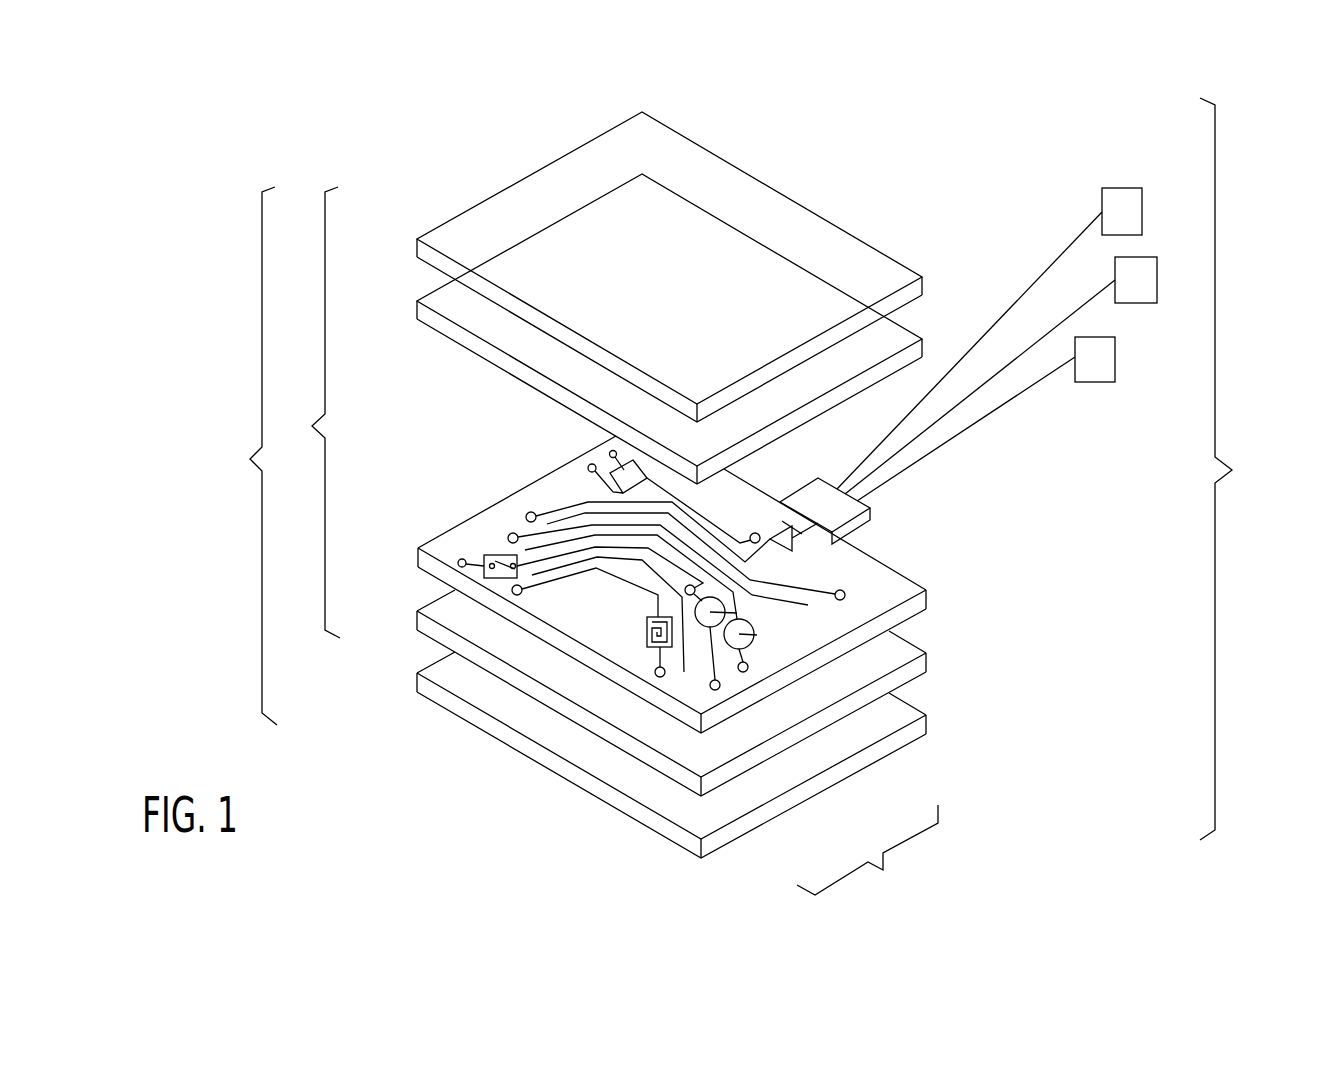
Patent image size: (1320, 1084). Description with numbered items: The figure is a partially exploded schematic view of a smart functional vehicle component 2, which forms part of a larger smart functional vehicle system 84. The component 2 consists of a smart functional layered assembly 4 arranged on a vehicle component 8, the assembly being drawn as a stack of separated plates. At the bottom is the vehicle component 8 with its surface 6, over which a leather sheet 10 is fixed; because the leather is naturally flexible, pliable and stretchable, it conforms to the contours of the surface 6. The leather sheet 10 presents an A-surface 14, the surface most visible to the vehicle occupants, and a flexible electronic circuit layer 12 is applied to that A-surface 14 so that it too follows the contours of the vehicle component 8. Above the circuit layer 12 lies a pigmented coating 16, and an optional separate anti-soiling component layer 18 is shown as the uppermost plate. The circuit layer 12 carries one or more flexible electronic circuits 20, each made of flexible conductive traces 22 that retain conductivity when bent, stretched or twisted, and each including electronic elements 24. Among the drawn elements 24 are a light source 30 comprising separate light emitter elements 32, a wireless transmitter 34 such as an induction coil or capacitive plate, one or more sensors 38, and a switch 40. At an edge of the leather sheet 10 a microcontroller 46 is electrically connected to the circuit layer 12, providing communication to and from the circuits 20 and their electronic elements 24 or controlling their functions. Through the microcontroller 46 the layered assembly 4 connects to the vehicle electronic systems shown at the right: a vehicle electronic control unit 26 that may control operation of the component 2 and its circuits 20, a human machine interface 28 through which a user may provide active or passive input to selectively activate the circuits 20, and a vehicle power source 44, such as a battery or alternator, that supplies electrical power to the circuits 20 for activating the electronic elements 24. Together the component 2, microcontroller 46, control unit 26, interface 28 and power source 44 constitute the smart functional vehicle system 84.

The smart functional vehicle component 2 is at (316, 412).
The smart functional layered assembly 4 is at (251, 456).
The surface 6 is at (455, 678).
The vehicle component 8 is at (417, 680).
The leather sheet 10 is at (417, 620).
The flexible electronic circuit layer 12 is at (448, 532).
The A-surface 14 is at (455, 615).
The pigmented coating 16 is at (415, 311).
The anti-soiling component layer 18 is at (415, 242).
The flexible electronic circuit 20 is at (574, 597).
The flexible conductive trace 22 is at (627, 582).
The electronic element 24 is at (653, 639).
The vehicle electronic control unit 26 is at (1120, 188).
The human machine interface 28 is at (1157, 280).
The light source 30 is at (867, 854).
The light emitter element 32 is at (737, 613).
The wireless transmitter 34 is at (647, 633).
The sensor 38 is at (610, 450).
The switch 40 is at (498, 555).
The vehicle power source 44 is at (1093, 382).
The microcontroller 46 is at (847, 507).
The smart functional vehicle system 84 is at (1231, 469).